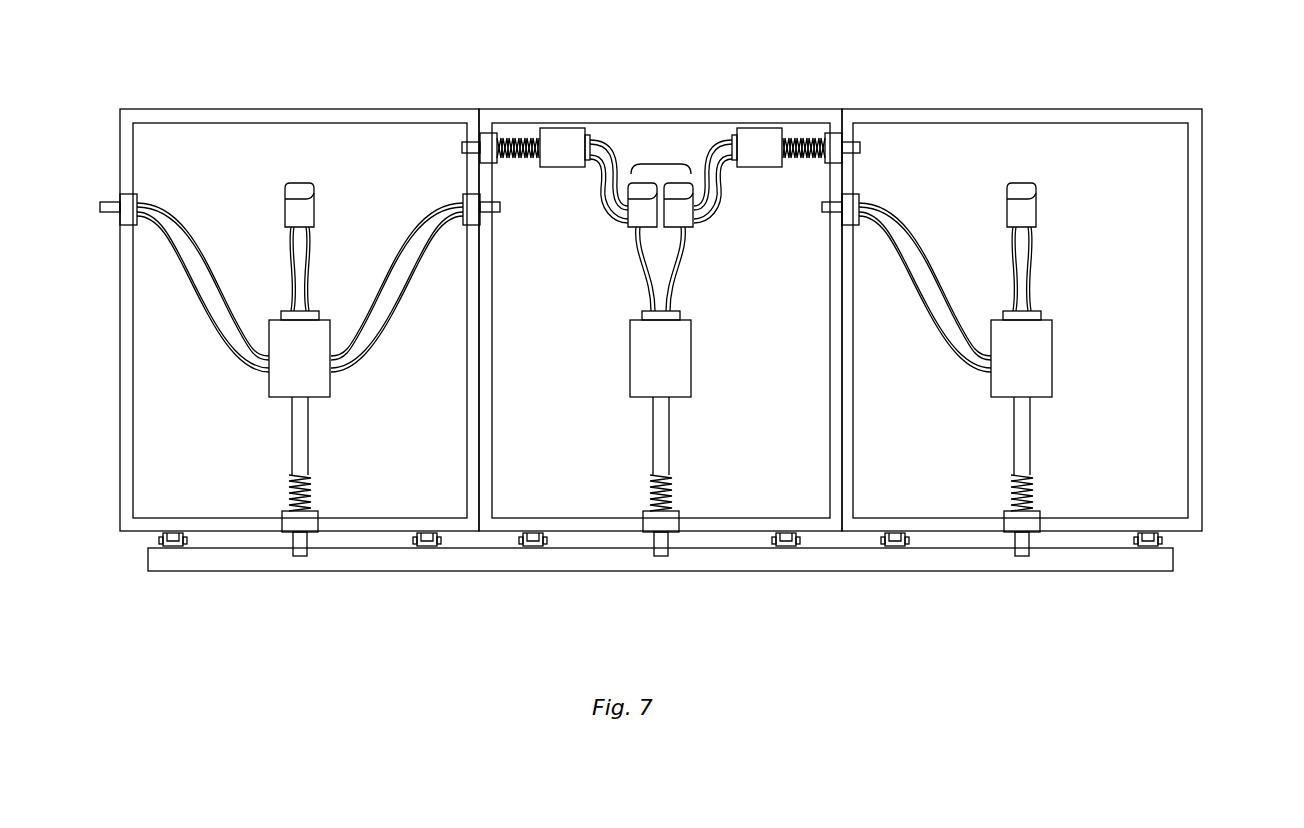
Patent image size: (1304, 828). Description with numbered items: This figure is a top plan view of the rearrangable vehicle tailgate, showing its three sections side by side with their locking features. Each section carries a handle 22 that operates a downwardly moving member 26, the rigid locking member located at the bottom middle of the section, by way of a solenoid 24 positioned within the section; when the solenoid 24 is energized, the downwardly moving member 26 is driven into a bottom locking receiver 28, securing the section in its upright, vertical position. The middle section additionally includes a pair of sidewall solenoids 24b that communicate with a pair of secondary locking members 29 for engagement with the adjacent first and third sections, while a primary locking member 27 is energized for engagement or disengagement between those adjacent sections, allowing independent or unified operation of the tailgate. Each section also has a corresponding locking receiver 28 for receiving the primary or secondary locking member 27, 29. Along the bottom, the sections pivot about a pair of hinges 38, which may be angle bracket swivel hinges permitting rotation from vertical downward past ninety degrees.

The handle 22 is at (287, 205).
The solenoid 24 is at (328, 385).
The sidewall solenoid 24b is at (573, 133).
The downwardly moving member 26 is at (297, 540).
The primary locking member 27 is at (118, 200).
The locking receiver 28 is at (468, 157).
The secondary locking member 29 is at (463, 147).
The hinge 38 is at (158, 541).